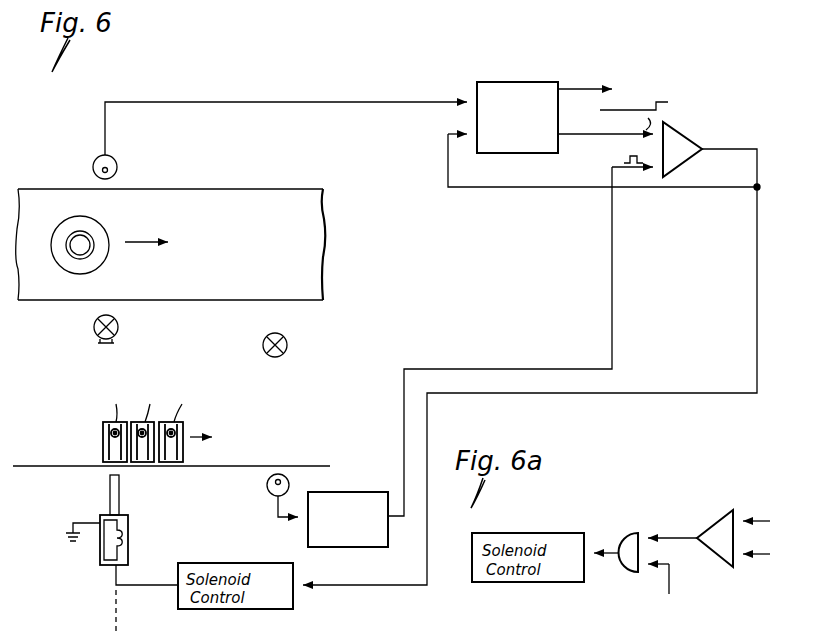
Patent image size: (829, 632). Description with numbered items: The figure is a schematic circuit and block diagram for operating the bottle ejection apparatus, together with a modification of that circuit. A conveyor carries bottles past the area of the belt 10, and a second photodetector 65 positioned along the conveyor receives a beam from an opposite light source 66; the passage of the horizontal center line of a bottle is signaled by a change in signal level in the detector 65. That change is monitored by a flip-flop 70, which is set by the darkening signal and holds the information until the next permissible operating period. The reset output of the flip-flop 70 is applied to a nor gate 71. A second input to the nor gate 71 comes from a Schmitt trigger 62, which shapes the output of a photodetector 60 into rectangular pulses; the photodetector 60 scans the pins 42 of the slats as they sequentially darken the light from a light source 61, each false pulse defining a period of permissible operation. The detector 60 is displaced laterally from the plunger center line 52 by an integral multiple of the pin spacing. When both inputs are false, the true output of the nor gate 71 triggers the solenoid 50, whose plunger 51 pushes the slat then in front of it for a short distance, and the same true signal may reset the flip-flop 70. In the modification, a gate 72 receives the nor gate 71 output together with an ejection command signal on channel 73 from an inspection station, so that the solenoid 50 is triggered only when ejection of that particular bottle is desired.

In FIG. 6, the web or strip material 10 is at (195, 200).
In FIG. 6, the pin 42 is at (110, 433).
In FIG. 6, the solenoid 50 is at (105, 552).
In FIG. 6, the plunger 51 is at (110, 490).
In FIG. 6, the center line 52 is at (110, 618).
In FIG. 6, the photodetector 60 is at (268, 492).
In FIG. 6, the light source 61 is at (286, 337).
In FIG. 6, the Schmitt trigger 62 is at (352, 492).
In FIG. 6, the second photodetector 65 is at (117, 160).
In FIG. 6, the light source 66 is at (94, 330).
In FIG. 6, the flip-flop 70 is at (520, 82).
In FIG. 6, the nor gate 71 is at (680, 128).
In FIG. 6A, the nor gate 71 is at (722, 527).
In FIG. 6A, the gate 72 is at (634, 530).
In FIG. 6A, the channel 73 is at (668, 583).